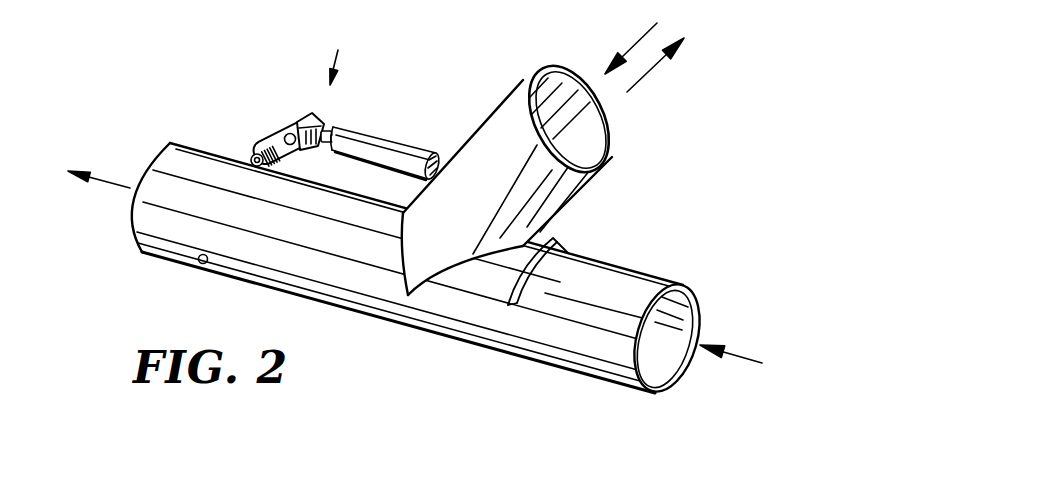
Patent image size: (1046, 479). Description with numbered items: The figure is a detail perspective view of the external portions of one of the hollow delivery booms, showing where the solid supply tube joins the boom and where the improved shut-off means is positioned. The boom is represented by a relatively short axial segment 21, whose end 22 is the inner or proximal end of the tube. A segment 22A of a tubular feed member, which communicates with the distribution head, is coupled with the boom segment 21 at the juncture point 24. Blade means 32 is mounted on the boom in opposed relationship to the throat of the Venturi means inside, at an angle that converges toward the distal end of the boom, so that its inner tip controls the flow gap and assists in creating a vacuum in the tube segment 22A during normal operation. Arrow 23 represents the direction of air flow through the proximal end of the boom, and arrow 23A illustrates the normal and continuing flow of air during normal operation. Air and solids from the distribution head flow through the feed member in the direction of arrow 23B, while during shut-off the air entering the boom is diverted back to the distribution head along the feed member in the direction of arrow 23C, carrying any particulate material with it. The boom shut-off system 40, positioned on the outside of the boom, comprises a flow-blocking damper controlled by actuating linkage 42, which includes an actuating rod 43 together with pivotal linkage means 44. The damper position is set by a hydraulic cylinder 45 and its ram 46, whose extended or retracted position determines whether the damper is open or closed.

The axial segment of delivery boom 21 is at (407, 327).
The end of boom segment 22 is at (693, 308).
The segment of tubular feed member 22A is at (527, 78).
The arrow 23 is at (747, 363).
The arrow 23A is at (112, 182).
The arrow 23B is at (648, 35).
The arrow 23C is at (643, 83).
The juncture point 24 is at (405, 253).
The blade means 32 is at (567, 243).
The boom shut-off system 40 is at (341, 55).
The actuating linkage 42 is at (265, 137).
The actuating rod 43 is at (250, 160).
The pivotal linkage means 44 is at (300, 114).
The hydraulic cylinder 45 is at (407, 150).
The ram 46 is at (329, 132).